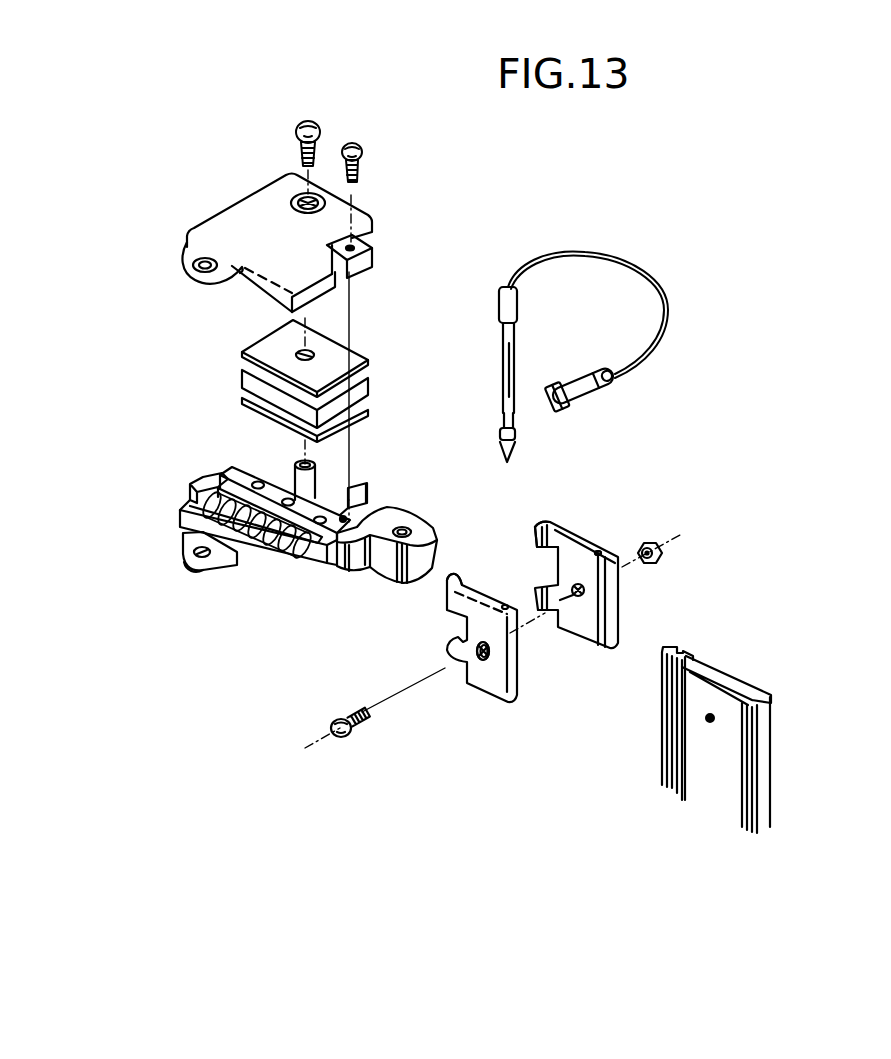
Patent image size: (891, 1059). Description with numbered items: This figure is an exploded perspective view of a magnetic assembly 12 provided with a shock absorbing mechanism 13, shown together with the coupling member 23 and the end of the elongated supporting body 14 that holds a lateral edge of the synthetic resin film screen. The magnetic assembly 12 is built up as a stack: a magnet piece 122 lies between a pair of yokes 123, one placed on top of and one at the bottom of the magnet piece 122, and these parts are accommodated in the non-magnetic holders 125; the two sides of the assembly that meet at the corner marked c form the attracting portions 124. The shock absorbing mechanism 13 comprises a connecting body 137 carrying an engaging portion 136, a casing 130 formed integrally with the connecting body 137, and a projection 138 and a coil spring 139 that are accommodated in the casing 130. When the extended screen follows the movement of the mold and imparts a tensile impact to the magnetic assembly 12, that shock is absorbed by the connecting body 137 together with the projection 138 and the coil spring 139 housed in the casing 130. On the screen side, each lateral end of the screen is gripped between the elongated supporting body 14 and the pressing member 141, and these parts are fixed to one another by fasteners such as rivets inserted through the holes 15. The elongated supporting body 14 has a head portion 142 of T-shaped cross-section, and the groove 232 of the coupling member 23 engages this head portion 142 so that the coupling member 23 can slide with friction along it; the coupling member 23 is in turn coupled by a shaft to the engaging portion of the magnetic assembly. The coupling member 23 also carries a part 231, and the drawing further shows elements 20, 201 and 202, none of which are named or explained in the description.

The magnetic assembly 12 is at (314, 384).
The magnet piece 122 is at (362, 378).
The yokes 123 is at (352, 362).
The attracting portions 124 is at (313, 376).
The non-magnetic holder 125 is at (276, 469).
The shock absorbing mechanism 13 is at (320, 410).
The casing 130 is at (268, 273).
The engaging portion 136 is at (203, 246).
The connecting body 137 is at (388, 512).
The projection 138 is at (196, 483).
The coil spring 139 is at (255, 548).
The elongated supporting body 14 is at (715, 716).
The pressing member 141 is at (700, 690).
The head portion 142 is at (672, 650).
The holes 15 is at (706, 716).
The locking pin 20 is at (513, 373).
The pin retainer clip 201 is at (575, 407).
The tether loop 202 is at (633, 263).
The coupling member 23 is at (575, 635).
The bracket hook 231 is at (463, 580).
The groove 232 is at (505, 607).